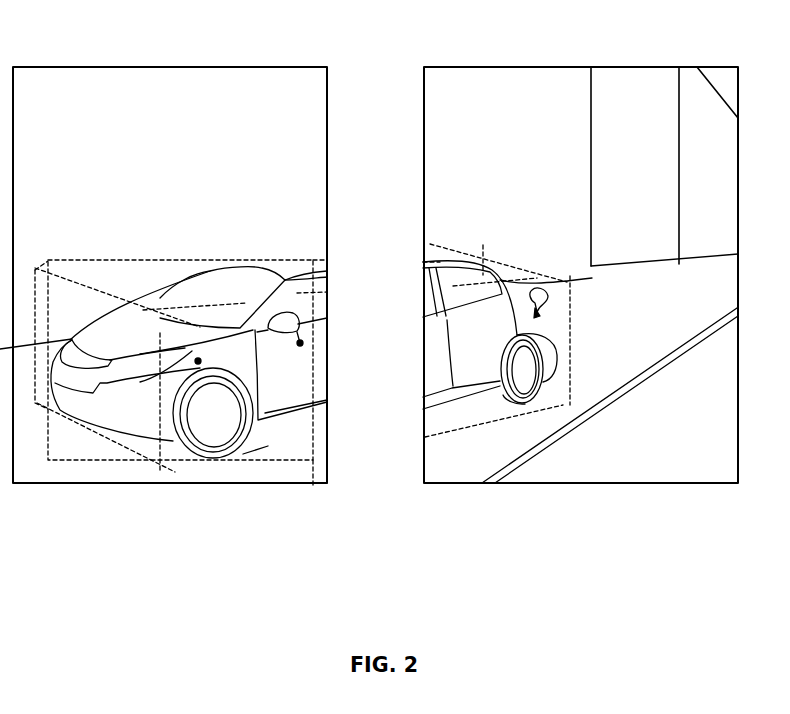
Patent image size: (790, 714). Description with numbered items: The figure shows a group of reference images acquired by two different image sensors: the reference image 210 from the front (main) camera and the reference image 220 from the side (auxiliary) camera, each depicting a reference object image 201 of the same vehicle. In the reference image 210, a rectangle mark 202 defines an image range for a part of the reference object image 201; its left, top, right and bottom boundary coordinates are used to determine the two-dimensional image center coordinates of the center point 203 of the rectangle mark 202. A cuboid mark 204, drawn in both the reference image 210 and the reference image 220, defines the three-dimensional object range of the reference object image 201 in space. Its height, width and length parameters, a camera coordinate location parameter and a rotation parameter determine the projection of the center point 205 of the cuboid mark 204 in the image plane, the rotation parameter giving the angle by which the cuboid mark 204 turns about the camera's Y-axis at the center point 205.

The reference object image 201 is at (308, 367).
The rectangle mark 202 is at (313, 487).
The center point of the rectangle mark 203 is at (198, 361).
The cuboid mark 204 is at (181, 258).
The center point of the cuboid mark 205 is at (276, 258).
The reference image 210 is at (41, 67).
The reference image 220 is at (687, 67).